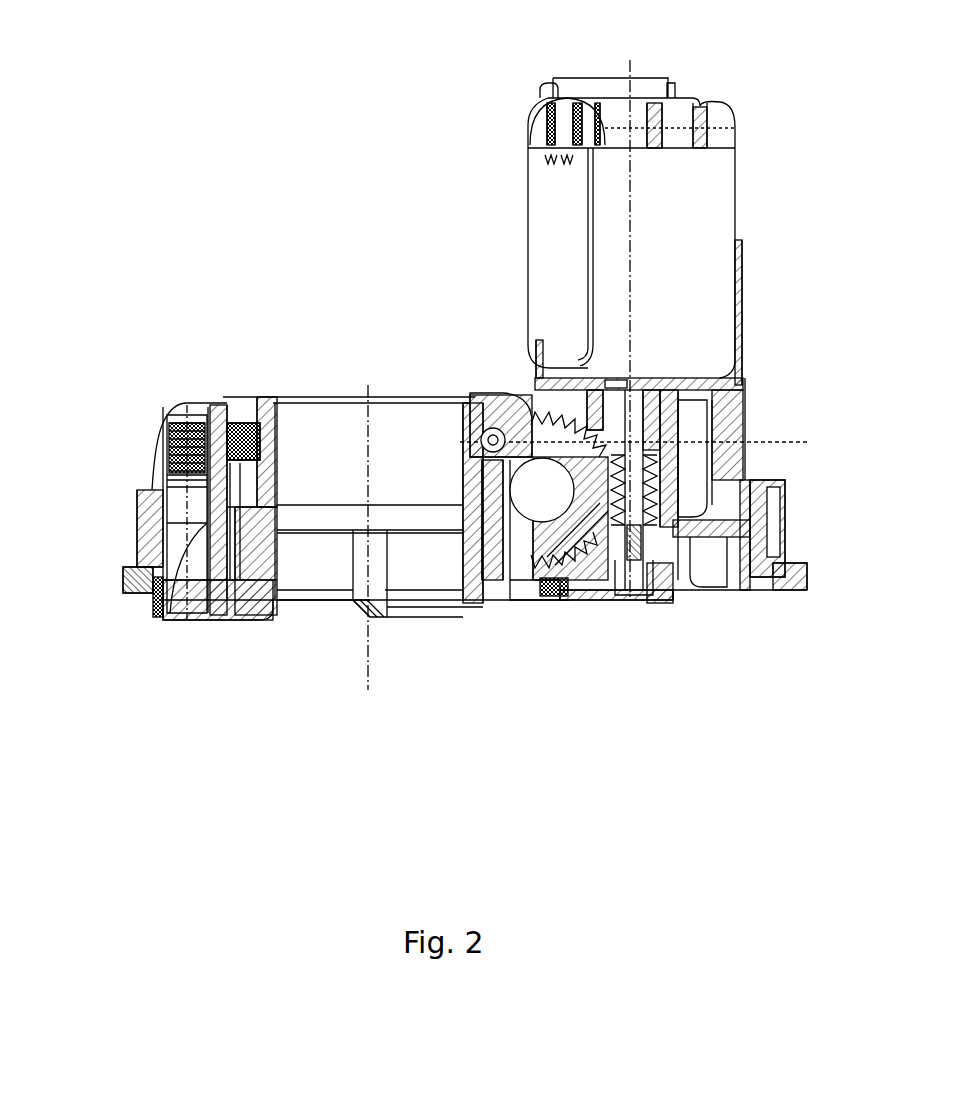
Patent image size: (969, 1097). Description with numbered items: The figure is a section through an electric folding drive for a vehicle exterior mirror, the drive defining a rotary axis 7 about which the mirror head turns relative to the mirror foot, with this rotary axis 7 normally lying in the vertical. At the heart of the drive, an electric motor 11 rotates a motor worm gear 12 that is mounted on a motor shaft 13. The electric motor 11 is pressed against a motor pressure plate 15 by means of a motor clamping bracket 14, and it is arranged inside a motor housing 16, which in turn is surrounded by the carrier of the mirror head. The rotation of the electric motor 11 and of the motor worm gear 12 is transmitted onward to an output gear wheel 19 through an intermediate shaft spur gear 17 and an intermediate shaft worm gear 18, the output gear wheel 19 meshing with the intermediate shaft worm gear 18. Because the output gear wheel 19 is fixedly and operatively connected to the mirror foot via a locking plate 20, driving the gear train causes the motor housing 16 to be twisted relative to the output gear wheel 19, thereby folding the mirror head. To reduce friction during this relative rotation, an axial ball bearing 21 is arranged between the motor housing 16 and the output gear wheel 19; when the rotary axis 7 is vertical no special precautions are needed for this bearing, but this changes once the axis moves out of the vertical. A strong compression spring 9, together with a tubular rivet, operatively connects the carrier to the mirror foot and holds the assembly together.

The rotary axis 7 is at (365, 627).
The compression spring 9 is at (158, 428).
The electric motor 11 is at (697, 252).
The motor worm gear 12 is at (740, 593).
The motor shaft 13 is at (727, 492).
The motor clamping bracket 14 is at (568, 100).
The motor pressure plate 15 is at (747, 383).
The motor housing 16 is at (450, 400).
The intermediate shaft spur gear 17 is at (528, 387).
The intermediate shaft worm gear 18 is at (497, 407).
The output gear wheel 19 is at (165, 618).
The locking plate 20 is at (232, 622).
The axial ball bearing 21 is at (230, 415).